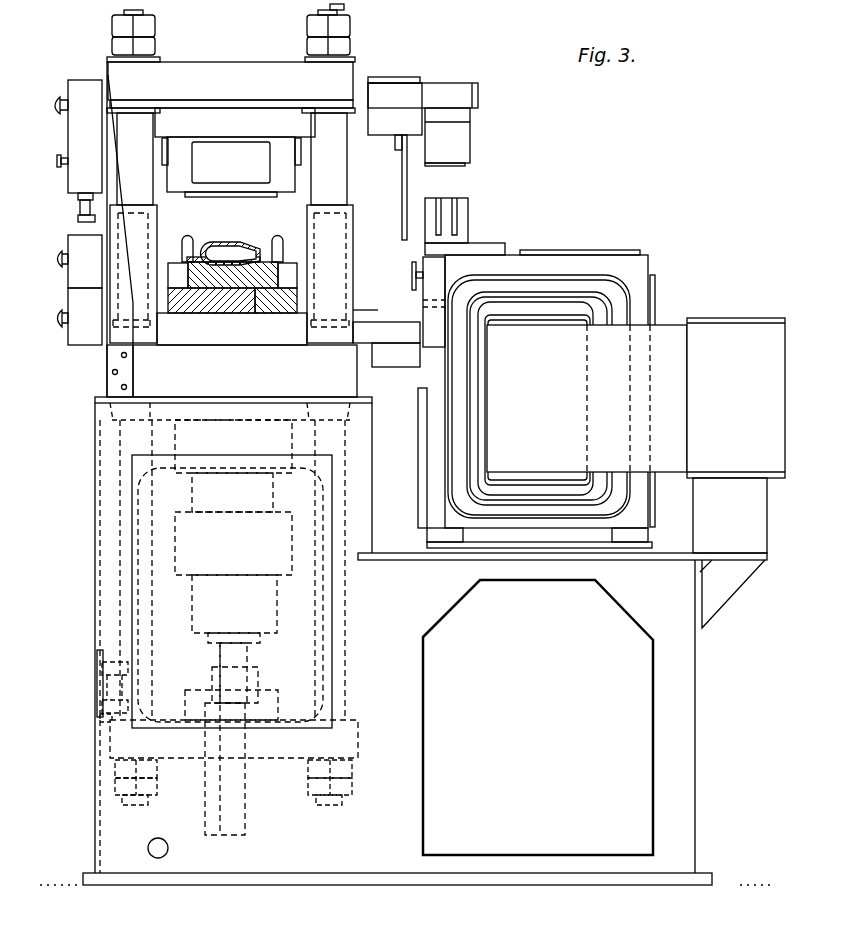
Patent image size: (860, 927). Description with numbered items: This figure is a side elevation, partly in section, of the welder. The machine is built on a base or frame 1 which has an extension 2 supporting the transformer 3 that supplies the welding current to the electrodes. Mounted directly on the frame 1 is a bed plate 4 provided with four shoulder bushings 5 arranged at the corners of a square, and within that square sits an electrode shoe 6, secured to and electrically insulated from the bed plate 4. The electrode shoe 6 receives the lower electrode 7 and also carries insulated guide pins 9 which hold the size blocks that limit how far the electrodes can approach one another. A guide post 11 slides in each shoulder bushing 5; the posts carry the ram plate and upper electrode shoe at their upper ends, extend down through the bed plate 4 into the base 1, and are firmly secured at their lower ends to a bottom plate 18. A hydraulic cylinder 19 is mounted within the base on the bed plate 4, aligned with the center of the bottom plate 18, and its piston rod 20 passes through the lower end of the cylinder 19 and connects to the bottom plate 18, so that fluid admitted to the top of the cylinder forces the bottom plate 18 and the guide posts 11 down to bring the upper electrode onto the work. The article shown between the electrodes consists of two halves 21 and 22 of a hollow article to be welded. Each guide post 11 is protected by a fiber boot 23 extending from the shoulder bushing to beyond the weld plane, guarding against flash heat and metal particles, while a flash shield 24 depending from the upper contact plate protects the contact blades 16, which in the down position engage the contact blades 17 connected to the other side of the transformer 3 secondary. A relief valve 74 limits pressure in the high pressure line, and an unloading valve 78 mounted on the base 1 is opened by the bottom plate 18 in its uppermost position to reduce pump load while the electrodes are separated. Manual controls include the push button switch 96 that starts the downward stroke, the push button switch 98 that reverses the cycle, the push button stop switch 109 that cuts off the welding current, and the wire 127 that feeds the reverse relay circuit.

The base or frame 1 is at (97, 640).
The extension 2 is at (425, 608).
The transformer 3 is at (638, 302).
The bed plate 4 is at (228, 330).
The shoulder bushings 5 is at (108, 334).
The electrode shoe 6 is at (215, 308).
The electrode 7 is at (272, 280).
The guide pins 9 is at (186, 236).
The guide post 11 is at (323, 130).
The contact blades 16 is at (463, 138).
The contact blades 17 is at (470, 225).
The bottom plate 18 is at (118, 753).
The hydraulic cylinder 19 is at (293, 553).
The piston rod 20 is at (243, 660).
The half of hollow article 21 is at (233, 242).
The half of hollow article 22 is at (252, 300).
The fiber boot 23 is at (110, 230).
The flash shield 24 is at (405, 187).
The relief valve 74 is at (105, 718).
The unloading valve 78 is at (100, 698).
The push button switch 96 is at (57, 101).
The push button switch 98 is at (58, 158).
The push button stop switch 109 is at (60, 257).
The wire 127 is at (55, 327).